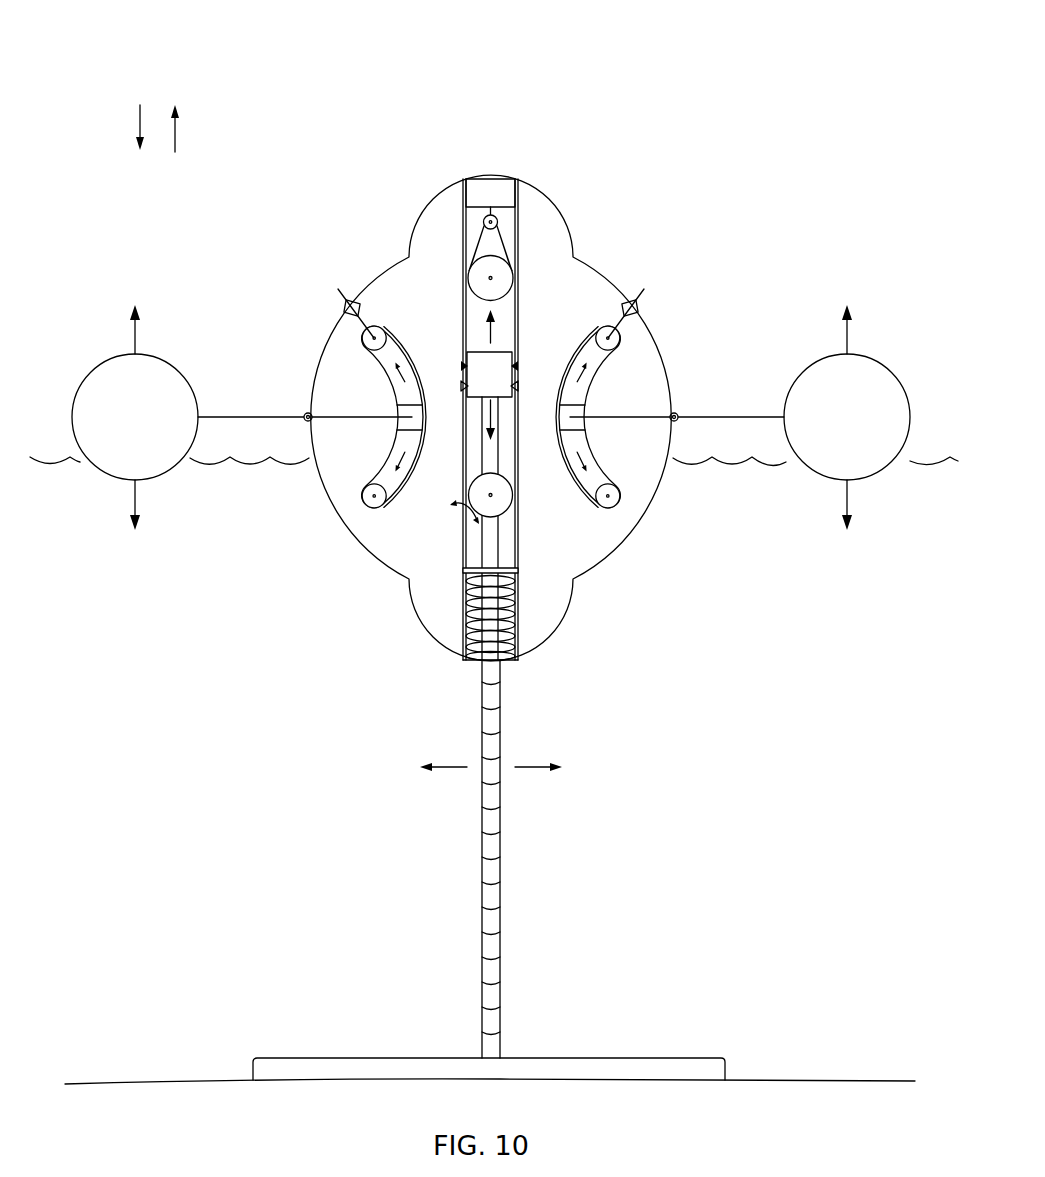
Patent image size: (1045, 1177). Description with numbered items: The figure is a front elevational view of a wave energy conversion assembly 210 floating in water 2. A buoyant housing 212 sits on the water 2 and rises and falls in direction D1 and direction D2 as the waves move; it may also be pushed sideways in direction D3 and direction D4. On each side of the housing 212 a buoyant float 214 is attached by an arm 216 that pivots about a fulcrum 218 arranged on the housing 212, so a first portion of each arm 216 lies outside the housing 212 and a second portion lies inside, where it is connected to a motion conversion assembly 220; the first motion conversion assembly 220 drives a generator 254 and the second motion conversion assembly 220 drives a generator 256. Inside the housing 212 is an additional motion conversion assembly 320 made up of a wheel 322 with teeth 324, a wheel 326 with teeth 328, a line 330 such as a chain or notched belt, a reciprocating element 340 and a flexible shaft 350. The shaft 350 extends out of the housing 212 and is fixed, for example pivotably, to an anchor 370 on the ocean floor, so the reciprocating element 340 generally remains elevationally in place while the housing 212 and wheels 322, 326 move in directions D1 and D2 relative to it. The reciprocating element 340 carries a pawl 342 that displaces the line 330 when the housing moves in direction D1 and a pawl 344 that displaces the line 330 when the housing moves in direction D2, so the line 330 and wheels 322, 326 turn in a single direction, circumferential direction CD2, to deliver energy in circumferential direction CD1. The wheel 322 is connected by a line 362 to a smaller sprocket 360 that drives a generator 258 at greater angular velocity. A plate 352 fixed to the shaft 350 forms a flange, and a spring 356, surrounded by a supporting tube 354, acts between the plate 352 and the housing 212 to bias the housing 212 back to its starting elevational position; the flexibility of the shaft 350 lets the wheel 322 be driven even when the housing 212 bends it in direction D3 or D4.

The wave energy conversion assembly 210 is at (215, 81).
The housing 212 is at (660, 342).
The float 214 is at (121, 432).
The arm 216 is at (257, 415).
The fulcrum 218 is at (307, 413).
The motion conversion assembly 220 is at (379, 302).
The generator 254 is at (347, 298).
The generator 256 is at (635, 298).
The generator 258 is at (492, 178).
The motion conversion assembly 320 is at (553, 250).
The wheel 322 is at (500, 278).
The teeth 324 is at (511, 290).
The wheel 326 is at (505, 484).
The teeth 328 is at (510, 512).
The line 330 is at (463, 320).
The reciprocating element 340 is at (501, 353).
The pawl 342 is at (464, 366).
The pawl 344 is at (520, 364).
The shaft 350 is at (501, 721).
The plate 352 is at (518, 570).
The tube 354 is at (463, 576).
The spring 356 is at (516, 612).
The sprocket 360 is at (482, 221).
The line 362 is at (507, 228).
The anchor 370 is at (683, 1057).
The water 2 is at (725, 559).
The direction D1 is at (176, 146).
The direction D2 is at (137, 125).
The direction D3 is at (524, 769).
The direction D4 is at (458, 769).
The circumferential direction CD1 is at (458, 518).
The circumferential direction CD2 is at (460, 534).